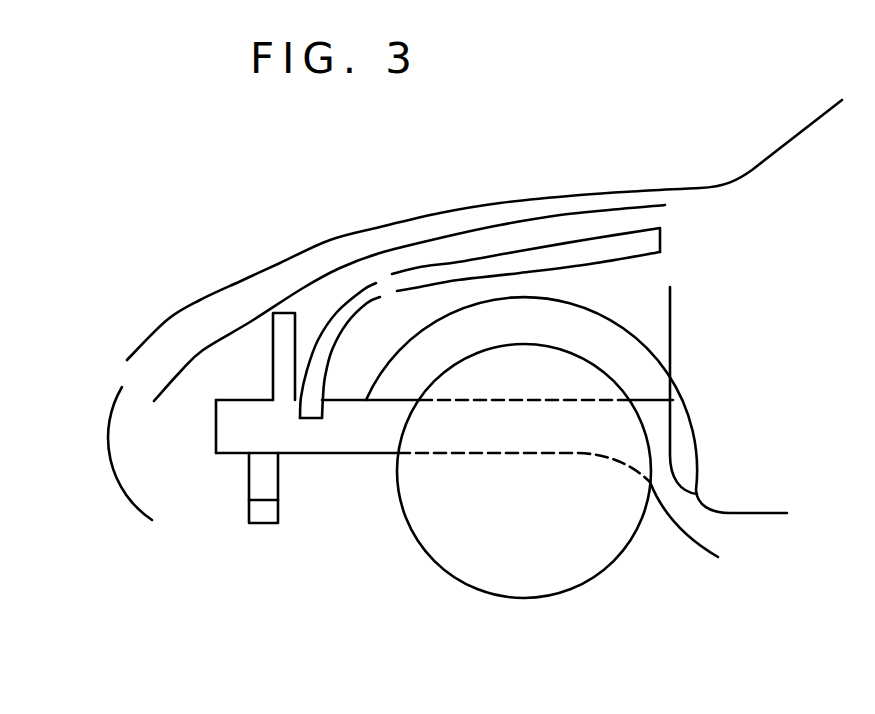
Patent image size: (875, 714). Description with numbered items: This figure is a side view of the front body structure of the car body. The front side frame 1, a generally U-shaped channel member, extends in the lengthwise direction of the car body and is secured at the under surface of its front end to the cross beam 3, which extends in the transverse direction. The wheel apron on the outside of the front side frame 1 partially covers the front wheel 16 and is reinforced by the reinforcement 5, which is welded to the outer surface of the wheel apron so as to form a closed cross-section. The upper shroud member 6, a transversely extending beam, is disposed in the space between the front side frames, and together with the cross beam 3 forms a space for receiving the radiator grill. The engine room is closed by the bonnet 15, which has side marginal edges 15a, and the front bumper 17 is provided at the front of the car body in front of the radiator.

The front side frame 1 is at (233, 402).
The cross beam 3 is at (253, 525).
The reinforcement 5 is at (458, 262).
The upper shroud member 6 is at (277, 313).
The bonnet 15 is at (330, 240).
The side marginal edges 15a is at (540, 218).
The front wheel 16 is at (610, 568).
The front bumper 17 is at (110, 470).